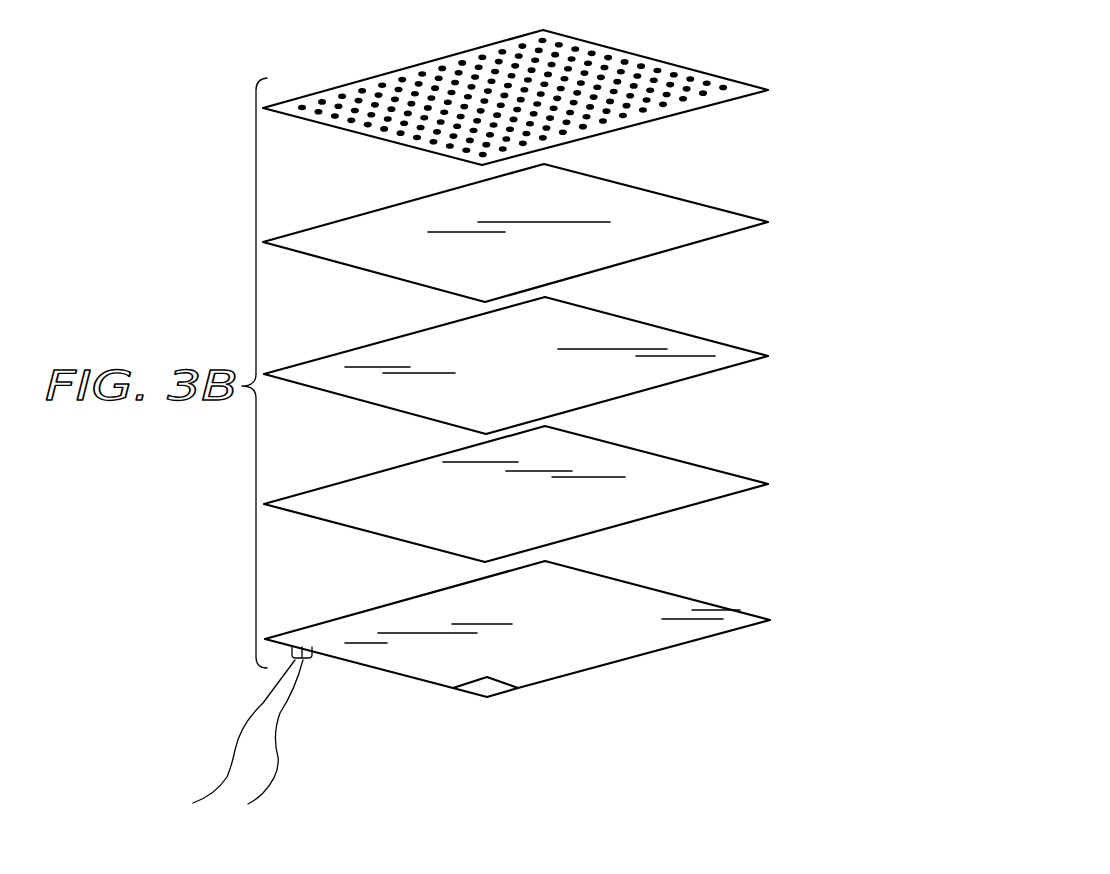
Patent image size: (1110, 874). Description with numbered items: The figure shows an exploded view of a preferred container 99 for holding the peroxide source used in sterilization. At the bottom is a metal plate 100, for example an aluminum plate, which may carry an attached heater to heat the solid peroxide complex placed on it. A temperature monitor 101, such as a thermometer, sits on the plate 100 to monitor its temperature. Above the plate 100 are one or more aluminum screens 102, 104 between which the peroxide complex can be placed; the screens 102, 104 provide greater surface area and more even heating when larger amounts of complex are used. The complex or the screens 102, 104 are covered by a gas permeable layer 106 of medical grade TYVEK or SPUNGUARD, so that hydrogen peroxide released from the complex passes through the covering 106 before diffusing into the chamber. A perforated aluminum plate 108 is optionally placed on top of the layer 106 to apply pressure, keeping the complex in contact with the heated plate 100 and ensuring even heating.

The container 99 is at (803, 260).
The metal plate 100 is at (725, 617).
The temperature monitor 101 is at (500, 690).
The aluminum screen 102 is at (728, 481).
The aluminum screen 104 is at (716, 360).
The gas permeable layer 106 is at (722, 228).
The perforated aluminum plate 108 is at (752, 90).